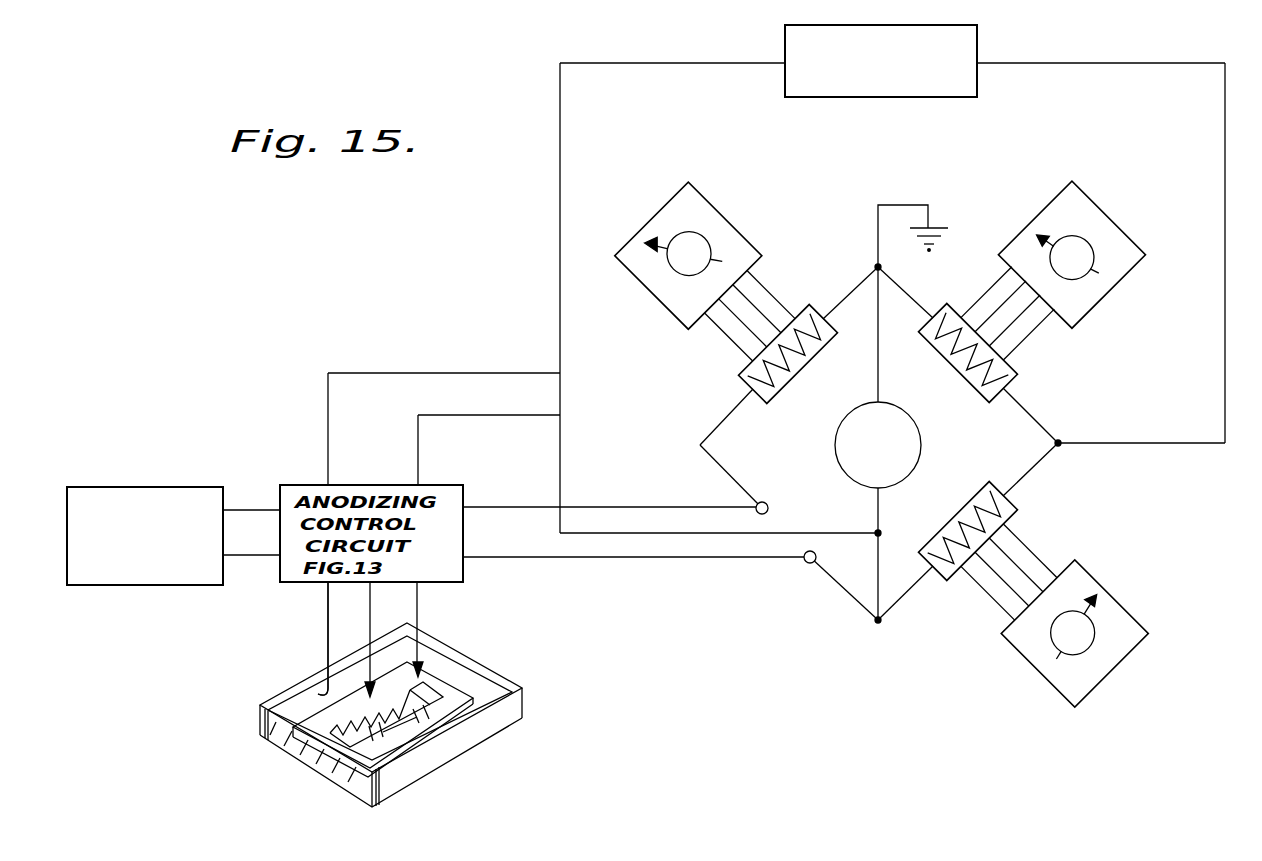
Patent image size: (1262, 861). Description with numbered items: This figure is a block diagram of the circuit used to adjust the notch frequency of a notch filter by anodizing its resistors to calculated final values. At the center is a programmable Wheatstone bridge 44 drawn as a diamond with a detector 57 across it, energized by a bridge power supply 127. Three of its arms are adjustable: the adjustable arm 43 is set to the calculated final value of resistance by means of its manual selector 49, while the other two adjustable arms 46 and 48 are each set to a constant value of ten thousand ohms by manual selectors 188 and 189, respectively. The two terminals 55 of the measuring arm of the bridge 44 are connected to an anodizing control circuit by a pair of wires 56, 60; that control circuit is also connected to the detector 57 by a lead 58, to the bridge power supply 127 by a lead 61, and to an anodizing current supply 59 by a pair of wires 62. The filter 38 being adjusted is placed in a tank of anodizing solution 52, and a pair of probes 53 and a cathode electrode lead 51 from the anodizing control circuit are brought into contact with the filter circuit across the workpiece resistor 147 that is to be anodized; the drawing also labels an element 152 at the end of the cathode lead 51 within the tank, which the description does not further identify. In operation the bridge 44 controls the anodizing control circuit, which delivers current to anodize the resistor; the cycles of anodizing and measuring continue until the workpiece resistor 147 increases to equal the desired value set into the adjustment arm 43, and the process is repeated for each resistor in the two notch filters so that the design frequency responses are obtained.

The bridge power supply 127 is at (977, 34).
The manual selector 188 is at (718, 225).
The second arm 46 is at (783, 311).
The manual selector 189 is at (1100, 276).
The adjustable arm 48 is at (1015, 349).
The programmable Wheatstone bridge 44 is at (1066, 427).
The detector 57 is at (922, 436).
The terminals 55 is at (770, 508).
The adjustable arm 43 is at (1018, 534).
The manual selector 49 is at (1099, 608).
The anodizing current supply 59 is at (210, 475).
The pair of wires 62 is at (262, 500).
The lead 61 is at (515, 358).
The lead 58 is at (530, 408).
The wire 60 is at (523, 510).
The wire 56 is at (600, 558).
The cathode electrode lead 51 is at (327, 613).
The probes 53 is at (372, 617).
The electrode 152 is at (317, 694).
The tank of anodizing solution 52 is at (523, 705).
The workpiece resistor 147 is at (458, 710).
The filter 38 is at (360, 752).